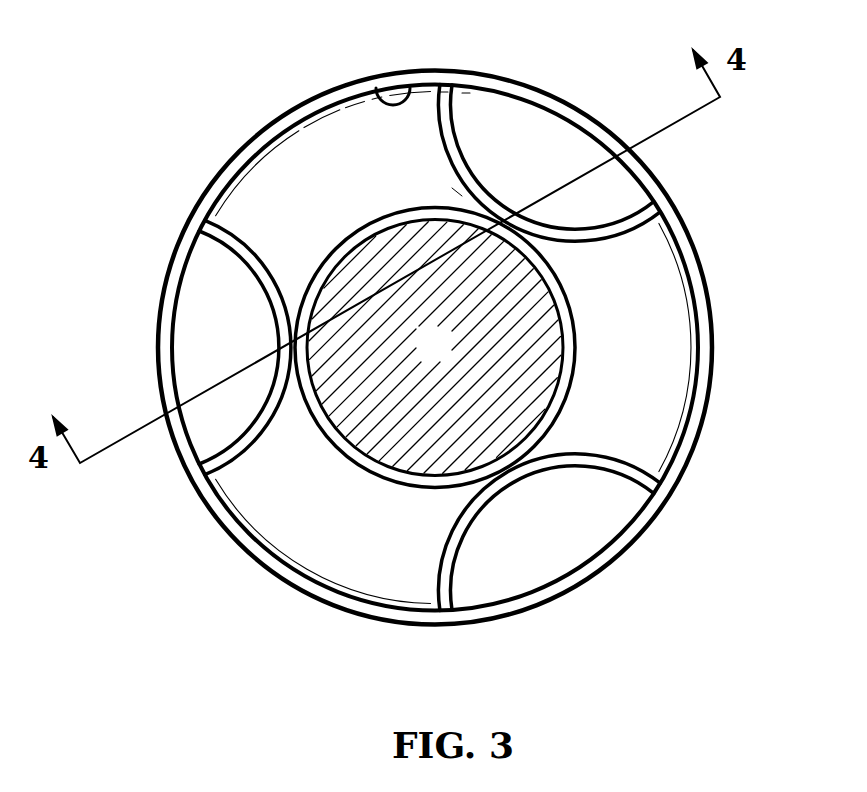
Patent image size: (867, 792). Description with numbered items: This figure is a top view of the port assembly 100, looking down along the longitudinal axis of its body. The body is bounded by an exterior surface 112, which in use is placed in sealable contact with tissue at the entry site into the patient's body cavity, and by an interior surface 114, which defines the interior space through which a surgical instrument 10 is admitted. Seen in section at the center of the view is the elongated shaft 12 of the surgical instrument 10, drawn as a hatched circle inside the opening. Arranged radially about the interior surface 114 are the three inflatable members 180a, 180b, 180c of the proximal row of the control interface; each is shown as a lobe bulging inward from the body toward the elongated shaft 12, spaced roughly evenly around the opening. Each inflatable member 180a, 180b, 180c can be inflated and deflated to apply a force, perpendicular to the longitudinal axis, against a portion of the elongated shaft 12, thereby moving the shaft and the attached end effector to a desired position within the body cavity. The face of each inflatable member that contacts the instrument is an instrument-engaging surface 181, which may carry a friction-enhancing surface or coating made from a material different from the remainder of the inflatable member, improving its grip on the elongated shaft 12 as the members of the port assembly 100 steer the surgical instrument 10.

The port assembly 100 is at (272, 118).
The exterior surface 112 is at (312, 93).
The interior surface 114 is at (408, 93).
The inflatable member 180a is at (208, 295).
The inflatable member 180b is at (555, 153).
The inflatable member 180c is at (563, 550).
The instrument-engaging surface 181 is at (457, 193).
The surgical instrument 10 is at (553, 342).
The elongated shaft 12 is at (445, 357).